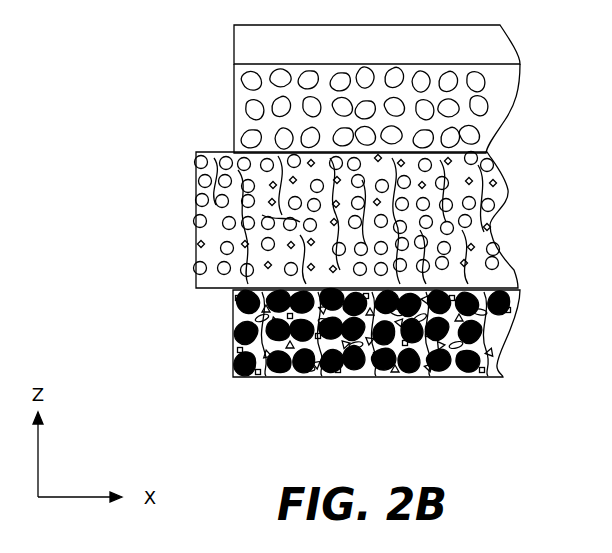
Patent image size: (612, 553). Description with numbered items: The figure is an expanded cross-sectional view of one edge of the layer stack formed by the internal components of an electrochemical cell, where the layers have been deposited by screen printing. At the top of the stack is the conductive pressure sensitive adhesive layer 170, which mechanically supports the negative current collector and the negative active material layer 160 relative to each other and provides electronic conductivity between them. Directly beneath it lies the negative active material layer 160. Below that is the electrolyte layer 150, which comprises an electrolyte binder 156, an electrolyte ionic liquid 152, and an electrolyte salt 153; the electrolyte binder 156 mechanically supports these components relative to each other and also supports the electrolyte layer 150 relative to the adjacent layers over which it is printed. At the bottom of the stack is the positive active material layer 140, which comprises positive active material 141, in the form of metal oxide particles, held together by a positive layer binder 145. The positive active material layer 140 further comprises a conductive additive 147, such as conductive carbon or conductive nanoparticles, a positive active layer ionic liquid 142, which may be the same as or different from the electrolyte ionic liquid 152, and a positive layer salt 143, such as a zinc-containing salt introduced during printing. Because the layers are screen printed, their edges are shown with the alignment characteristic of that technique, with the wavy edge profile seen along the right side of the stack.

The conductive pressure sensitive adhesive layer 170 is at (240, 50).
The negative active material layer 160 is at (232, 115).
The electrolyte layer 150 is at (290, 207).
The electrolyte ionic liquid 152 is at (208, 197).
The electrolyte salt 153 is at (196, 182).
The electrolyte binder 156 is at (232, 228).
The positive active material layer 140 is at (311, 361).
The positive active material 141 is at (235, 333).
The positive active layer ionic liquid 142 is at (338, 370).
The positive layer salt 143 is at (395, 370).
The positive layer binder 145 is at (255, 370).
The conductive additive 147 is at (308, 368).